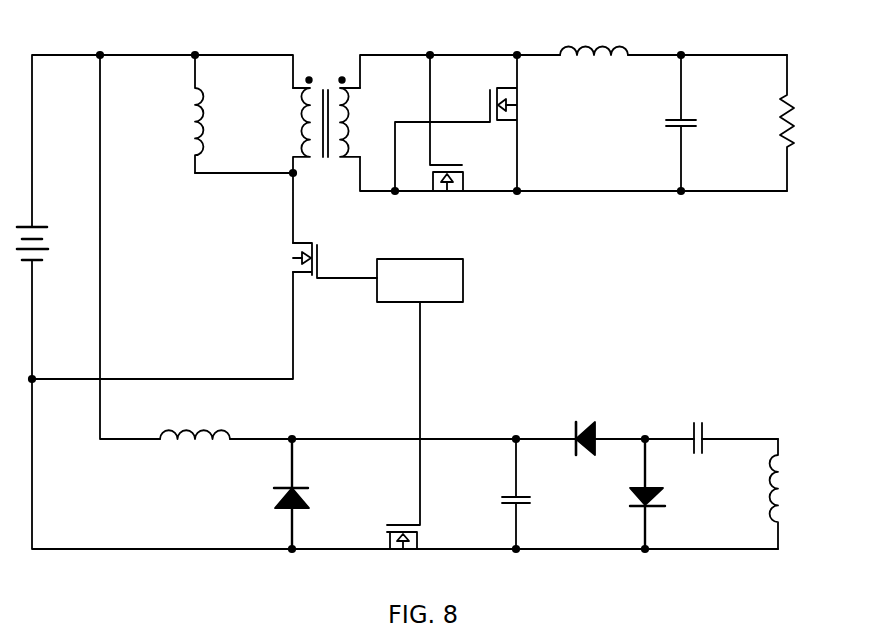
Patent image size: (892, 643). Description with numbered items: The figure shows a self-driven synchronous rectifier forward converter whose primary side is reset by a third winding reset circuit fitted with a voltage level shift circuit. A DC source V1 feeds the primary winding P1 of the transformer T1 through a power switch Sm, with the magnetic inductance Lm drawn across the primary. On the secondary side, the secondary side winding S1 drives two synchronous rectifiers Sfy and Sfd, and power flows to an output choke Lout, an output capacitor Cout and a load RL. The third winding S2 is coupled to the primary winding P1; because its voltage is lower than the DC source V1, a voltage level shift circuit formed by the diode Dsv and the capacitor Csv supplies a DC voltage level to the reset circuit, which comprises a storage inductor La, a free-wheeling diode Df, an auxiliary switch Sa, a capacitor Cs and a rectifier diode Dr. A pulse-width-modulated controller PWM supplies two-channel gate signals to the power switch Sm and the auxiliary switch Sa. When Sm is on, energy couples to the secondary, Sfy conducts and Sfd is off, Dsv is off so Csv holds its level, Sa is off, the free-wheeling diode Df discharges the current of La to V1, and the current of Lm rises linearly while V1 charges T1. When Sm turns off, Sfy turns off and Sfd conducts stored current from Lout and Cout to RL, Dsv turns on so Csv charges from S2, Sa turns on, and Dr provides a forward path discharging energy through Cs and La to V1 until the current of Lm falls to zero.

The DC source V1 is at (44, 240).
The magnetic inductance Lm is at (177, 114).
The primary winding P1 is at (288, 125).
The secondary side winding S1 is at (355, 117).
The transformer T1 is at (320, 142).
The power switch Sm is at (335, 248).
The pulse-width-modulated controller PWM is at (420, 280).
The synchronous rectifier Sfy is at (445, 145).
The synchronous rectifier Sfd is at (475, 123).
The output choke Lout is at (594, 38).
The output capacitor Cout is at (703, 123).
The load RL is at (801, 123).
The storage inductor La is at (195, 424).
The free-wheeling diode Df is at (302, 494).
The auxiliary switch Sa is at (401, 557).
The capacitor Cs is at (528, 494).
The rectifier diode Dr is at (576, 426).
The capacitor Csv is at (705, 425).
The diode Dsv is at (667, 494).
The third winding S2 is at (789, 494).